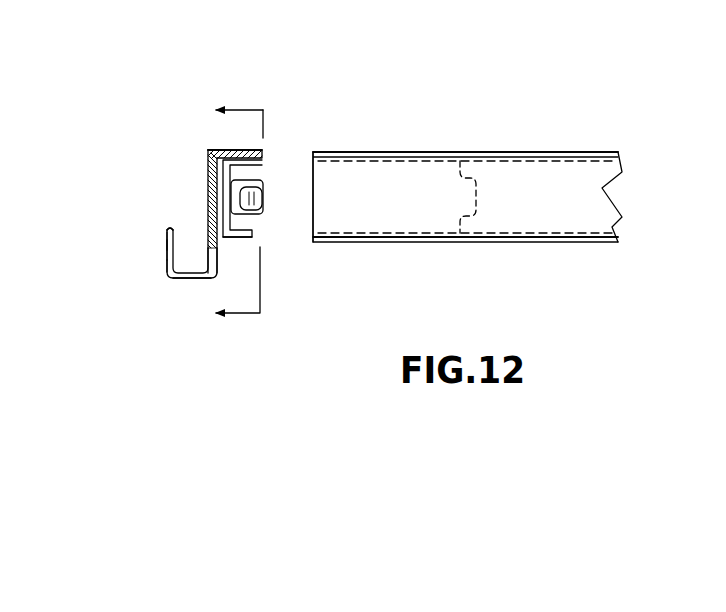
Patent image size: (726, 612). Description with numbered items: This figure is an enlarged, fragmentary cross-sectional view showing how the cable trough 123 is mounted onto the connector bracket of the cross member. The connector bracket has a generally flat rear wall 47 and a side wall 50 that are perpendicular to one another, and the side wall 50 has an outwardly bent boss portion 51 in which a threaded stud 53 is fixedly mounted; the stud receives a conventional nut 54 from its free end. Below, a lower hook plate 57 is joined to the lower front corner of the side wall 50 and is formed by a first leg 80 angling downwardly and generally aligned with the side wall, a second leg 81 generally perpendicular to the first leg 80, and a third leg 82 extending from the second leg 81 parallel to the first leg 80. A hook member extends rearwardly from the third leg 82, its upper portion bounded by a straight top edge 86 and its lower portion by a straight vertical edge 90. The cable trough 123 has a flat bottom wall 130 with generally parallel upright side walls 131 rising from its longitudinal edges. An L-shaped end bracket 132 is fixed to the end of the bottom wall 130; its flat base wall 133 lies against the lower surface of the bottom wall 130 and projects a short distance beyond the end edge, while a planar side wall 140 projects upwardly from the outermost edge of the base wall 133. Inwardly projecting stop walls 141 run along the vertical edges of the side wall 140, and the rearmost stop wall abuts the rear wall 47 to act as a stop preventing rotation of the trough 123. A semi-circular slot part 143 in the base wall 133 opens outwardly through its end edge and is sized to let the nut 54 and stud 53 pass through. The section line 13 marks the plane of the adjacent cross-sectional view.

The section line indicator 13 is at (210, 216).
The rear wall 47 is at (214, 148).
The side wall 50 is at (207, 182).
The boss portion 51 is at (207, 214).
The threaded stud 53 is at (269, 159).
The nut 54 is at (268, 207).
The lower hook plate 57 is at (158, 257).
The first leg 80 is at (216, 268).
The second leg 81 is at (182, 284).
The third leg 82 is at (167, 275).
The top edge 86 is at (165, 250).
The straight vertical edge 90 is at (167, 228).
The cable trough 123 is at (430, 133).
The bottom wall 130 is at (568, 167).
The upright side walls 131 is at (409, 152).
The end bracket 132 is at (300, 149).
The base wall 133 is at (288, 218).
The planar side wall 140 is at (210, 151).
The stop walls 141 is at (240, 152).
The semi-circular slot part 143 is at (265, 196).